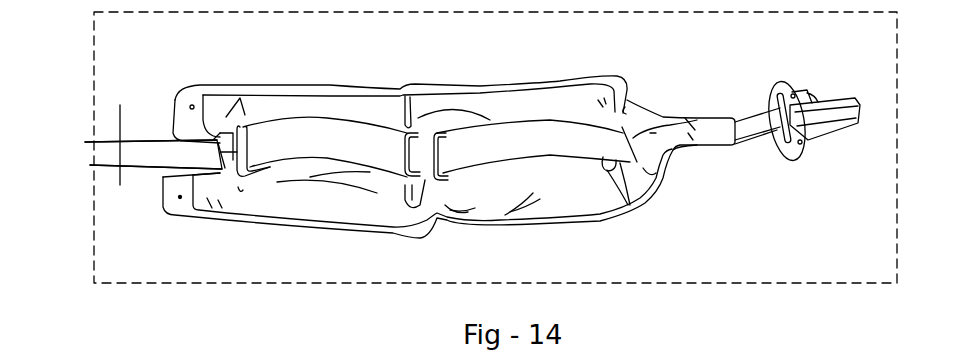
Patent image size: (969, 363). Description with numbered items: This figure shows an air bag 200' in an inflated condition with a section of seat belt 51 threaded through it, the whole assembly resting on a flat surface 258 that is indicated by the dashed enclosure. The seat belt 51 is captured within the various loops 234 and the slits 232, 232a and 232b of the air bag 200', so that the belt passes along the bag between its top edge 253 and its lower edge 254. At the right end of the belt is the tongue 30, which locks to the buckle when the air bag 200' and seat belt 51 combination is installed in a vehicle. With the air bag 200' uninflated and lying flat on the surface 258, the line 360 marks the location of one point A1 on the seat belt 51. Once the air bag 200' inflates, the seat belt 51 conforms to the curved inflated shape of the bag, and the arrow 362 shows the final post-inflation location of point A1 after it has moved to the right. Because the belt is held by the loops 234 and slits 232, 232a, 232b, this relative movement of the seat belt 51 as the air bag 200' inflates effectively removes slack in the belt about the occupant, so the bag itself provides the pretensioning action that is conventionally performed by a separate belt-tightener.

The flat surface 258 is at (92, 118).
The arrow 362 is at (165, 143).
The air bag 200' is at (357, 95).
The top edge of the bag 253 is at (337, 96).
The lower shell portion 254 is at (314, 225).
The slit 232 is at (410, 143).
The slit 232a is at (604, 170).
The slit 232b is at (630, 110).
The loop 234 is at (228, 152).
The tongue 30 is at (810, 98).
The seat belt 51 is at (157, 160).
The line 360 is at (118, 183).
The point A1 is at (118, 152).